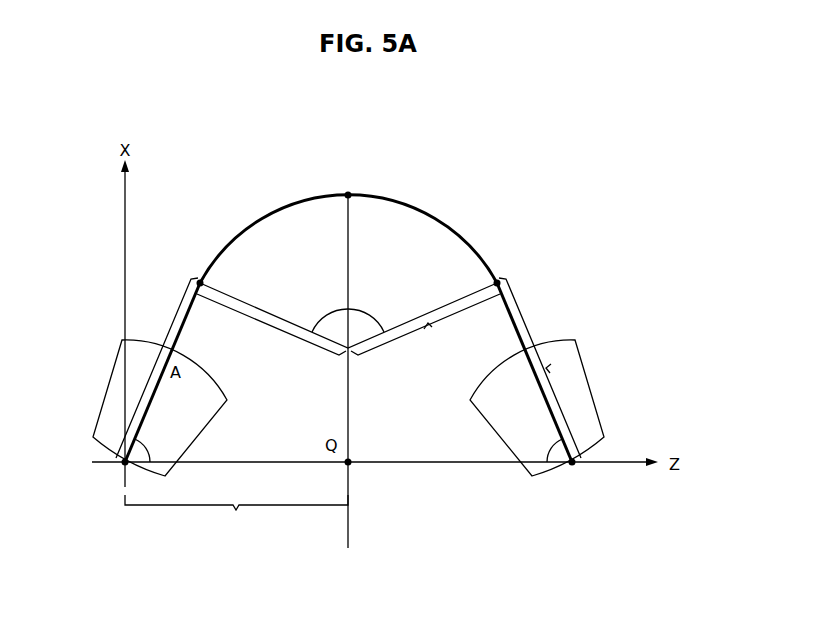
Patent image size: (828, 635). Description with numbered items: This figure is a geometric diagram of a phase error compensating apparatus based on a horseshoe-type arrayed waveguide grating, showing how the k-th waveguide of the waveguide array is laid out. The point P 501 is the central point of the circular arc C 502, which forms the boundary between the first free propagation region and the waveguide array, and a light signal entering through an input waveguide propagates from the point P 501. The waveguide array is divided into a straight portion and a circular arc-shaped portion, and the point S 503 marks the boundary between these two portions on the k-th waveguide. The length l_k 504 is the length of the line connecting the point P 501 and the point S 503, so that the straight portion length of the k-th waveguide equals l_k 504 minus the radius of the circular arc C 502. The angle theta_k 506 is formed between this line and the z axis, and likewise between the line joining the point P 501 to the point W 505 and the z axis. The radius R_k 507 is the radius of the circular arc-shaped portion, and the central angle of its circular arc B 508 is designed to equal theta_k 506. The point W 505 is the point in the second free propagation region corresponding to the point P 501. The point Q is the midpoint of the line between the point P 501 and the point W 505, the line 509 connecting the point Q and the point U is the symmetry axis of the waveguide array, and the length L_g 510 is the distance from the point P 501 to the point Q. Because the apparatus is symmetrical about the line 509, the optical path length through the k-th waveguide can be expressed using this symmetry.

The point P 501 is at (124, 466).
The circular arc C 502 is at (348, 408).
The point S 503 is at (200, 280).
The length l_k 504 is at (152, 362).
The point W 505 is at (573, 466).
The angle theta_k 506 is at (349, 448).
The radius R_k 507 is at (272, 329).
The circular arc B 508 is at (348, 239).
The line connecting point Q and point U 509 is at (348, 187).
The length L_g 510 is at (236, 518).